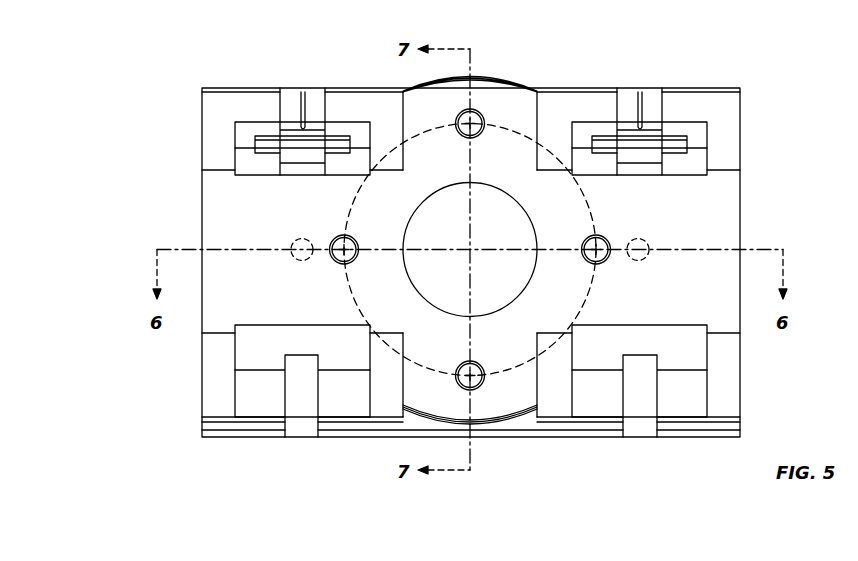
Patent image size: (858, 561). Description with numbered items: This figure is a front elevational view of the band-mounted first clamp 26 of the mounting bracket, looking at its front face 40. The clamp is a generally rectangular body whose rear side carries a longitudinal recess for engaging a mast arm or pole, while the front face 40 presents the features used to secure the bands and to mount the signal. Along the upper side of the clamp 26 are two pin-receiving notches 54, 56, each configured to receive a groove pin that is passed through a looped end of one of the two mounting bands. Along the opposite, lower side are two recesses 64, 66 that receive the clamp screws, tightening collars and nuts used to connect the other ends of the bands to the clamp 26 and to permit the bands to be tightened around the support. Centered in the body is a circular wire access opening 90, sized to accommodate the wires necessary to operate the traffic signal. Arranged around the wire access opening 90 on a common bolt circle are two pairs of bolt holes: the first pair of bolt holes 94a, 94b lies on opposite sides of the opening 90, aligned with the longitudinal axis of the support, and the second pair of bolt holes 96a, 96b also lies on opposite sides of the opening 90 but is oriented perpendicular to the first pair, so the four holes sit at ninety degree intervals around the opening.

The first clamp 26 is at (723, 198).
The front face 40 is at (723, 323).
The pin-receiving notch 54 is at (673, 142).
The pin-receiving notch 56 is at (268, 142).
The recess 64 is at (597, 399).
The recess 66 is at (267, 399).
The wire access opening 90 is at (425, 223).
The bolt hole 94a is at (603, 238).
The bolt hole 94b is at (338, 262).
The bolt hole 96a is at (470, 362).
The bolt hole 96b is at (465, 131).